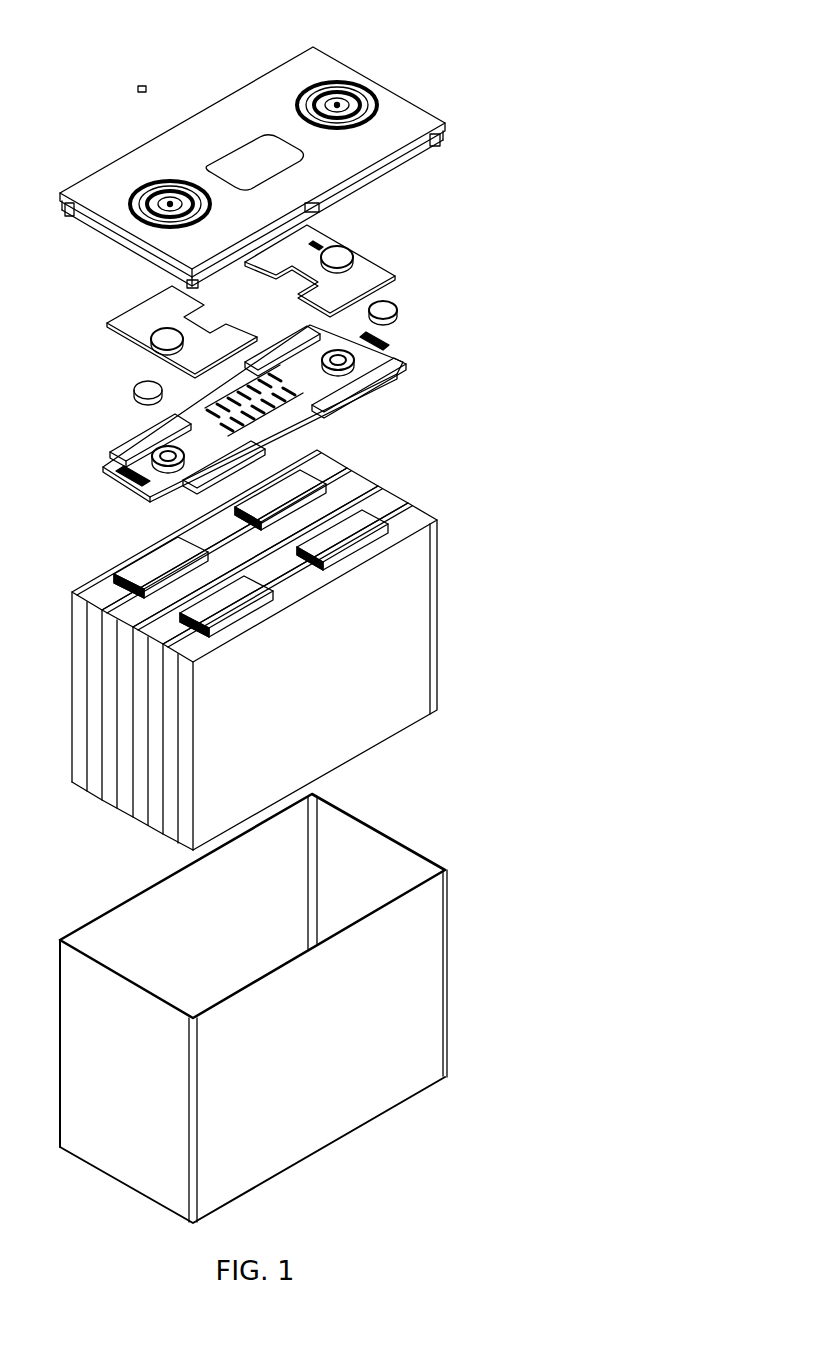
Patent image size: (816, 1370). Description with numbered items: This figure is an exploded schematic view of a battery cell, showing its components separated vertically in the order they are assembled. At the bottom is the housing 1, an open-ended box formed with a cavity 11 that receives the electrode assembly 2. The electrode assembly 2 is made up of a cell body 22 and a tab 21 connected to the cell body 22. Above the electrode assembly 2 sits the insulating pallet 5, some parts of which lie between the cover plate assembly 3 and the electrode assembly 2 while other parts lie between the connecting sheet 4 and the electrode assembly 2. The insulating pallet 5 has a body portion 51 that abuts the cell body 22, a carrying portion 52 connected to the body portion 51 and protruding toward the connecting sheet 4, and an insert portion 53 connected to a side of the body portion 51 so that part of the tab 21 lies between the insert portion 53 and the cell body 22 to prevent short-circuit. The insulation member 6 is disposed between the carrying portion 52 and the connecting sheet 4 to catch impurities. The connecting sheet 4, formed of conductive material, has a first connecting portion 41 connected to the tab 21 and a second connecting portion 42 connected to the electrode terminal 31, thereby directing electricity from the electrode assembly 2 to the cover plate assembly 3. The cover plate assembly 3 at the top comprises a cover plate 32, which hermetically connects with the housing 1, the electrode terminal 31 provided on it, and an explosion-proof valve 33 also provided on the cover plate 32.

The housing 1 is at (273, 1006).
The cavity 11 is at (362, 843).
The electrode assembly 2 is at (273, 638).
The tab 21 is at (135, 575).
The cell body 22 is at (425, 640).
The cover plate assembly 3 is at (252, 155).
The electrode terminal 31 is at (333, 93).
The cover plate 32 is at (253, 82).
The explosion-proof valve 33 is at (222, 143).
The connecting sheet 4 is at (234, 300).
The first connecting portion 41 is at (165, 297).
The second connecting portion 42 is at (152, 333).
The insulating pallet 5 is at (248, 423).
The body portion 51 is at (130, 478).
The carrying portion 52 is at (168, 466).
The insert portion 53 is at (130, 447).
The insulation member 6 is at (138, 385).